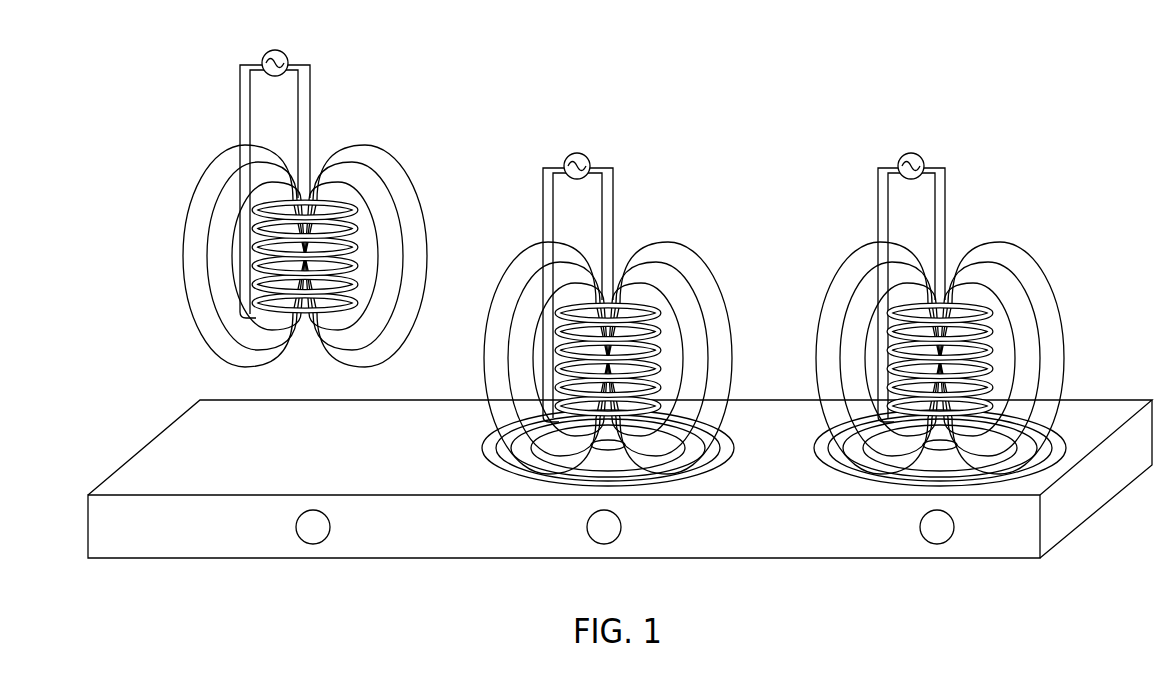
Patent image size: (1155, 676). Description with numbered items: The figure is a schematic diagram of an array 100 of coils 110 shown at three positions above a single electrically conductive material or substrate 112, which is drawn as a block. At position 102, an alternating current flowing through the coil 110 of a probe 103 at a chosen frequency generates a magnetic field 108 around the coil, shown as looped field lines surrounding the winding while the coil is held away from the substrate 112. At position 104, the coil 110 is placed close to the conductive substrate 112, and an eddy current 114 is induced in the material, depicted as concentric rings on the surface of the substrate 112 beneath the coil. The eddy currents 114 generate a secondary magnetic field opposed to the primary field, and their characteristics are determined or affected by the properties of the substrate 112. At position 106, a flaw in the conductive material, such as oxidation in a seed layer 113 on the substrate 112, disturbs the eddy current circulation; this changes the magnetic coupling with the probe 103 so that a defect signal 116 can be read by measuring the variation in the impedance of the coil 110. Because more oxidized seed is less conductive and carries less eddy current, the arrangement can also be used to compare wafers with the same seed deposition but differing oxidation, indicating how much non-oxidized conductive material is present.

The array 100 is at (1012, 68).
The position 102 is at (226, 54).
The probe 103 is at (240, 105).
The position 104 is at (528, 157).
The position 106 is at (861, 155).
The magnetic field 108 is at (427, 257).
The coil 110 is at (300, 239).
The substrate 112 is at (460, 538).
The seed layer 113 is at (188, 450).
The eddy current 114 is at (726, 430).
The defect signal 116 is at (1013, 410).